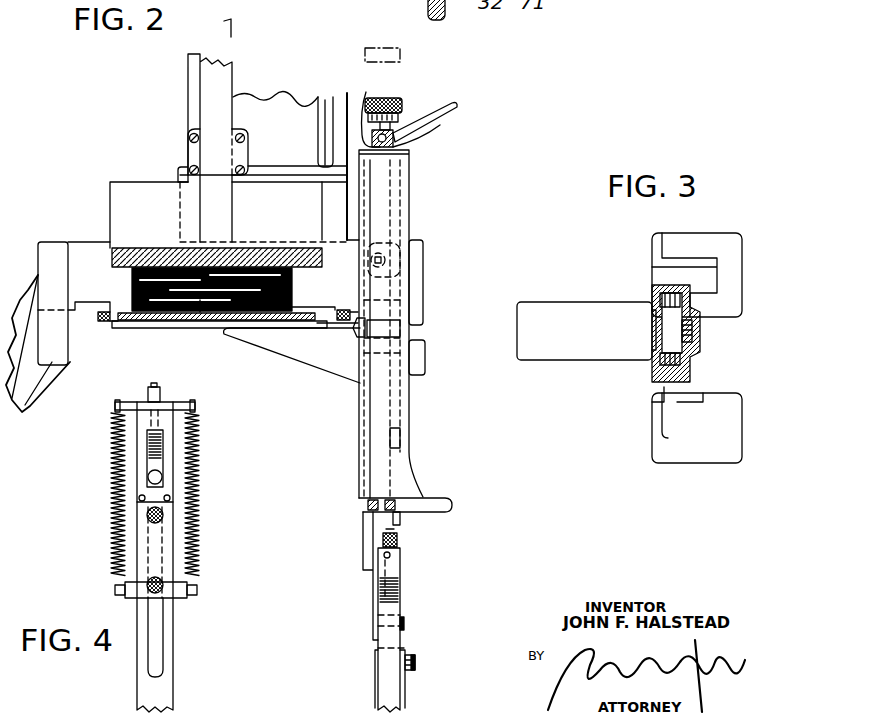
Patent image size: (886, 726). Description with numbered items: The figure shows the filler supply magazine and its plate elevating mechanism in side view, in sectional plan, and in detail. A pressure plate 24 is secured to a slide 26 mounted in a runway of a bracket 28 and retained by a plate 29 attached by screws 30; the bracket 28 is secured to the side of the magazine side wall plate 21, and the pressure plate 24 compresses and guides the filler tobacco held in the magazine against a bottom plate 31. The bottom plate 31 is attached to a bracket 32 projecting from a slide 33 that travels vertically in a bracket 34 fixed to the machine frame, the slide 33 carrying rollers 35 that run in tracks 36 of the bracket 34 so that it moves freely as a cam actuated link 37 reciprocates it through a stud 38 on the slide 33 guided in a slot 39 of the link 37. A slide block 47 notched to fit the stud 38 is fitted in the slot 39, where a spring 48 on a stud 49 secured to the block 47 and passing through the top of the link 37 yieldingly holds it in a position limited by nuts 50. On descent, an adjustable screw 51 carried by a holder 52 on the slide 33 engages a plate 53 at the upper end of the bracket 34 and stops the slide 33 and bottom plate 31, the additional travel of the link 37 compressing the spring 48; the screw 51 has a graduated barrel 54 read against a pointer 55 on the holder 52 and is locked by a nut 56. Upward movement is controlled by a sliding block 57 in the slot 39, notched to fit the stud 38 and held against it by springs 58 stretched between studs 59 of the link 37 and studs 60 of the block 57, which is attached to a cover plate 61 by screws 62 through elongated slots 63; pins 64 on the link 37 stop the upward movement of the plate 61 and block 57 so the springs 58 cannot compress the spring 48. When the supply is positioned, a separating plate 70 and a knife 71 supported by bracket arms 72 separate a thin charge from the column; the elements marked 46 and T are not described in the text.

In FIG. 2, the plate 21 is at (118, 203).
In FIG. 2, the pressure plate 24 is at (157, 250).
In FIG. 2, the slide 26 is at (232, 76).
In FIG. 2, the bracket 28 is at (284, 110).
In FIG. 2, the plate 29 is at (206, 151).
In FIG. 2, the screws 30 is at (192, 134).
In FIG. 2, the bottom plate 31 is at (158, 328).
In FIG. 2, the bracket 32 is at (280, 338).
In FIG. 3, the bracket 32 is at (545, 348).
In FIG. 2, the slide 33 is at (398, 395).
In FIG. 3, the slide 33 is at (666, 315).
In FIG. 2, the bracket 34 is at (410, 182).
In FIG. 3, the bracket 34 is at (733, 275).
In FIG. 2, the rollers 35 is at (390, 235).
In FIG. 3, the rollers 35 is at (672, 298).
In FIG. 2, the tracks 36 is at (392, 205).
In FIG. 3, the tracks 36 is at (696, 342).
In FIG. 2, the cam actuated link 37 is at (388, 677).
In FIG. 4, the cam actuated link 37 is at (175, 686).
In FIG. 2, the stud 38 is at (405, 625).
In FIG. 4, the stud 38 is at (163, 477).
In FIG. 4, the slot 39 is at (157, 650).
In FIG. 2, the stack of material 46 is at (269, 250).
In FIG. 2, the slide block 47 is at (376, 626).
In FIG. 4, the slide block 47 is at (163, 463).
In FIG. 2, the spring 48 is at (383, 590).
In FIG. 4, the spring 48 is at (160, 443).
In FIG. 2, the stud 49 is at (392, 568).
In FIG. 4, the stud 49 is at (148, 425).
In FIG. 2, the nuts 50 is at (384, 538).
In FIG. 4, the nuts 50 is at (148, 394).
In FIG. 2, the adjustable screw 51 is at (400, 55).
In FIG. 2, the holder 52 is at (364, 108).
In FIG. 3, the holder 52 is at (652, 328).
In FIG. 2, the plate 53 is at (400, 152).
In FIG. 2, the graduated barrel 54 is at (402, 105).
In FIG. 2, the pointer 55 is at (430, 128).
In FIG. 2, the nut 56 is at (457, 107).
In FIG. 2, the sliding block 57 is at (376, 684).
In FIG. 4, the sliding block 57 is at (166, 489).
In FIG. 4, the springs 58 is at (112, 534).
In FIG. 2, the studs 59 is at (383, 556).
In FIG. 4, the studs 59 is at (195, 406).
In FIG. 4, the studs 60 is at (115, 589).
In FIG. 2, the cover or plate 61 is at (406, 694).
In FIG. 4, the cover or plate 61 is at (145, 550).
In FIG. 2, the screws 62 is at (416, 663).
In FIG. 4, the screws 62 is at (158, 596).
In FIG. 4, the elongated slots 63 is at (147, 512).
In FIG. 2, the pins 64 is at (405, 650).
In FIG. 4, the pins 64 is at (140, 495).
In FIG. 2, the separating plate 70 is at (120, 322).
In FIG. 2, the knife 71 is at (330, 338).
In FIG. 2, the bracket arms 72 is at (101, 310).
In FIG. 2, the tape T is at (200, 322).